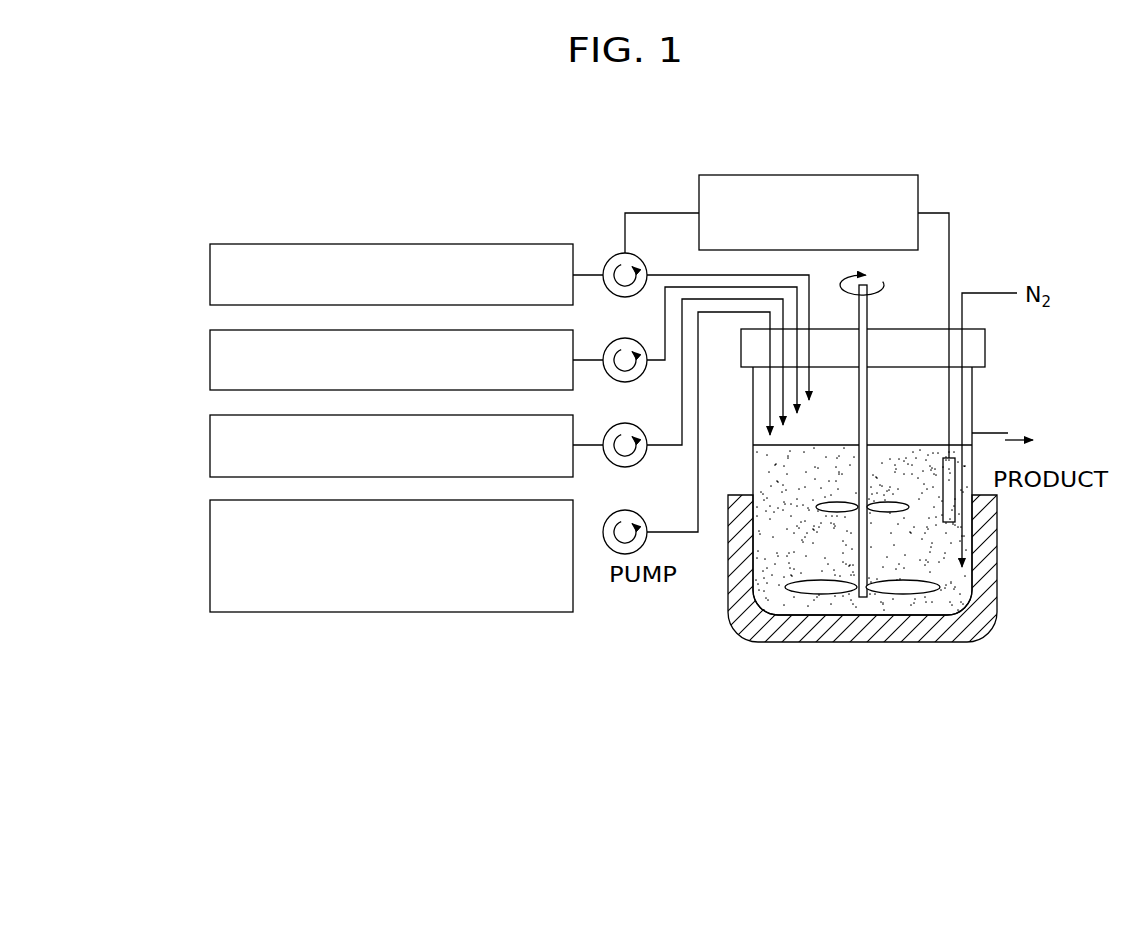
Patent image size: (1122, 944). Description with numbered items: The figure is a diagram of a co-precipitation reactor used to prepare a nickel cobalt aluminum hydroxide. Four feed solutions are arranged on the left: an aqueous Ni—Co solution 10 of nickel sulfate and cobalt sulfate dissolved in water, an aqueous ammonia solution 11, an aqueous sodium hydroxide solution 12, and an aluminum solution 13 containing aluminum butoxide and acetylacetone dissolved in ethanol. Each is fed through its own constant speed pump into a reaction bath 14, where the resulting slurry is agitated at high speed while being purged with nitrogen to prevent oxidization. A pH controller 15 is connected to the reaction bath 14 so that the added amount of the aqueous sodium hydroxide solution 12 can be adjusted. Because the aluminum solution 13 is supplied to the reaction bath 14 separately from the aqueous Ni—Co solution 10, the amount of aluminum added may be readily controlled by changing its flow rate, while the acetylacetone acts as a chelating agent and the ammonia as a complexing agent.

The aqueous Ni—Co solution 10 is at (210, 446).
The aqueous ammonia solution 11 is at (210, 360).
The aqueous sodium hydroxide solution 12 is at (210, 275).
The aluminum solution 13 is at (210, 558).
The reaction bath 14 is at (900, 592).
The pH controller 15 is at (810, 175).